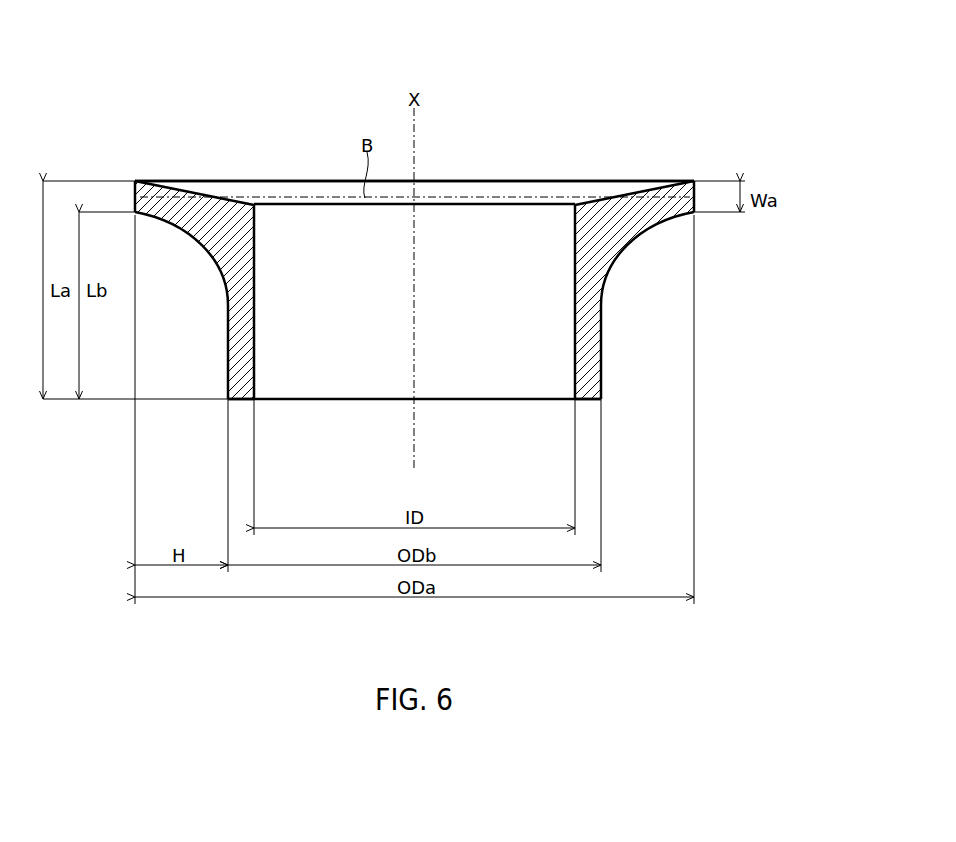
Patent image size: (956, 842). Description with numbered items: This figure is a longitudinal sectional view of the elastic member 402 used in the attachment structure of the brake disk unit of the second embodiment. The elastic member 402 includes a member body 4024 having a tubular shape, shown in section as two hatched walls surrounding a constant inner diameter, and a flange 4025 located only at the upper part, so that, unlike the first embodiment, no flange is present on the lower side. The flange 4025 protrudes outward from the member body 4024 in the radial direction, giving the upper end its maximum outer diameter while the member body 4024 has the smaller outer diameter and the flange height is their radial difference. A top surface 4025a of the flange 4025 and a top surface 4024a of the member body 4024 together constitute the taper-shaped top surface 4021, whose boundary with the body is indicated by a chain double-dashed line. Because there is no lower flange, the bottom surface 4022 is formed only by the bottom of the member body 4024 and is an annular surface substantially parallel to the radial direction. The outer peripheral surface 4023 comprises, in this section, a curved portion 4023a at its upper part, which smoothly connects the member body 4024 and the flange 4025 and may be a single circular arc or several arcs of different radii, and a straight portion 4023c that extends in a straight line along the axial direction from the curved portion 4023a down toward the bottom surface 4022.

The elastic member 402 is at (613, 50).
The top surface 4021 is at (628, 137).
The bottom surface 4022 is at (277, 400).
The outer peripheral surface 4023 is at (770, 98).
The curved portion 4023a is at (618, 257).
The straight portion 4023c is at (602, 340).
The member body 4024 is at (237, 203).
The top surface of member body 4024a is at (520, 198).
The flange 4025 is at (149, 185).
The top surface of flange 4025a is at (585, 192).